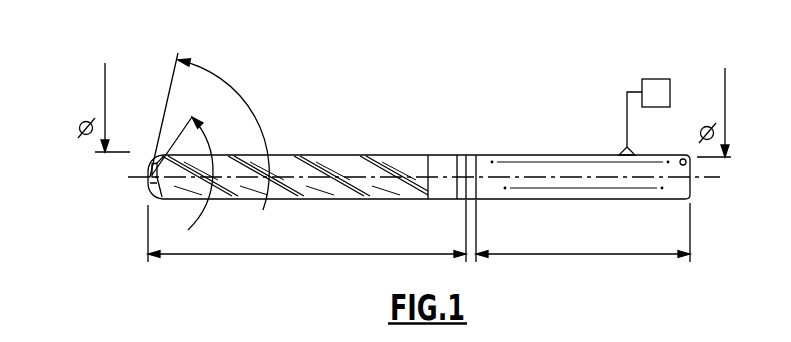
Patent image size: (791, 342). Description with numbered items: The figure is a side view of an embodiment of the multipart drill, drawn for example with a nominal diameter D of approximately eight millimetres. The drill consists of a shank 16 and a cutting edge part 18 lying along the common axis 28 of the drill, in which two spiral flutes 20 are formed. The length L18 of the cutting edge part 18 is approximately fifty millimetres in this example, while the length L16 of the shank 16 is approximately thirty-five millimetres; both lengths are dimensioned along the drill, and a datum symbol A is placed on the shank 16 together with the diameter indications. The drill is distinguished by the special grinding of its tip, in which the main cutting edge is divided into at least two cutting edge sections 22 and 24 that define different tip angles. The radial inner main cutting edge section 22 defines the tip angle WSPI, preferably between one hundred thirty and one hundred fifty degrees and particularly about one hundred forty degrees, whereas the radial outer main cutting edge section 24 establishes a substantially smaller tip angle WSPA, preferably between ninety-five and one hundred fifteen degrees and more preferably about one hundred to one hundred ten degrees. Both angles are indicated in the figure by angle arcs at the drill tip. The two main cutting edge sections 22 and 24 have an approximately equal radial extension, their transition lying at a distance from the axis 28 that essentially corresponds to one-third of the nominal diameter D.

The shank 16 is at (523, 167).
The cutting edge part 18 is at (318, 148).
The spiral flutes 20 is at (300, 193).
The radial inner main cutting edge section 22 is at (150, 187).
The radial outer main cutting edge section 24 is at (148, 200).
The axis 28 is at (556, 181).
The datum A is at (644, 117).
The nominal diameter D is at (104, 80).
The length of the cutting edge part L18 is at (237, 258).
The length of the shank L16 is at (586, 258).
The tip angle of the inner main cutting edge section WSPI is at (228, 78).
The tip angle of the outer main cutting edge section WSPA is at (213, 147).